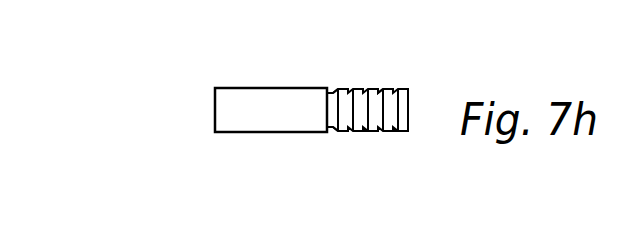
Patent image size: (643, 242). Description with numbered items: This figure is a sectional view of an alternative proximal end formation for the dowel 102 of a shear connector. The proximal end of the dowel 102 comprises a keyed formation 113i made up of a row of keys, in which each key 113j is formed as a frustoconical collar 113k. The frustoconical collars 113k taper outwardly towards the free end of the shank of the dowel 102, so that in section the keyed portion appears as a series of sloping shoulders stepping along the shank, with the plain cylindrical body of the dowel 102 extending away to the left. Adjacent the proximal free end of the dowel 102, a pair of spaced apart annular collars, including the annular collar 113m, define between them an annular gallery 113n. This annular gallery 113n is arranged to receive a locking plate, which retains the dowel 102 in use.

The dowel 102 is at (232, 108).
The keyed formation 113i is at (350, 132).
The key 113j is at (390, 90).
The frustoconical collar 113k is at (367, 132).
The annular collar 113m is at (442, 67).
The annular gallery 113n is at (395, 133).